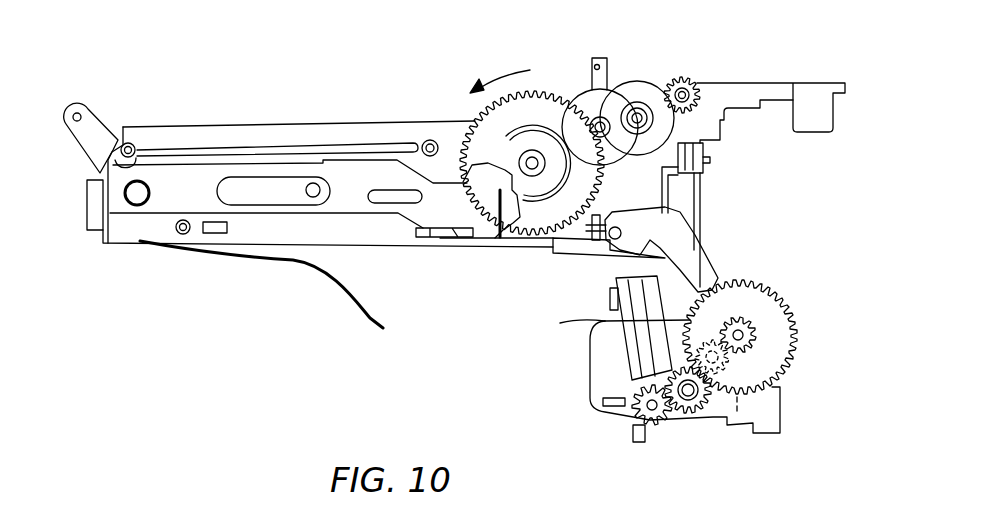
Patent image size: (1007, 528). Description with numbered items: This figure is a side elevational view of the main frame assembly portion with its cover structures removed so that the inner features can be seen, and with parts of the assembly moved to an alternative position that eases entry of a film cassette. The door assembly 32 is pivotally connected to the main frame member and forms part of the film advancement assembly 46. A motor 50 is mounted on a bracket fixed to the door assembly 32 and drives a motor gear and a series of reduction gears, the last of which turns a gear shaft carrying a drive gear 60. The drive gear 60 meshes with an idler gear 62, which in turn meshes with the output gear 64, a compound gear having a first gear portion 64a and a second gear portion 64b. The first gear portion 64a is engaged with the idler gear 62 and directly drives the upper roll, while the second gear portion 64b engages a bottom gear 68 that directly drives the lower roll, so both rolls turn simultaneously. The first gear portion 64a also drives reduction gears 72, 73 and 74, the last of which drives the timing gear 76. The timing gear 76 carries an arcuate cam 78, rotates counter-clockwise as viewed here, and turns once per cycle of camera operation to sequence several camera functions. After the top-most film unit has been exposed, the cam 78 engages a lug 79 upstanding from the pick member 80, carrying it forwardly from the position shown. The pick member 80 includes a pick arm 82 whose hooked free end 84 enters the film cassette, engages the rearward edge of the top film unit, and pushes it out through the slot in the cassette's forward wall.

The door assembly 32 is at (814, 254).
The film advancement assembly 46 is at (508, 369).
The motor 50 is at (595, 322).
The drive gear 60 is at (640, 395).
The idler gear 62 is at (707, 413).
The output gear 64 is at (790, 317).
The first gear portion 64a is at (772, 283).
The second gear portion 64b is at (770, 347).
The bottom gear 68 is at (737, 417).
The reduction gear 72 is at (700, 80).
The reduction gear 73 is at (635, 88).
The reduction gear 74 is at (587, 110).
The timing gear 76 is at (541, 222).
The arcuate cam 78 is at (528, 127).
The lug 79 is at (495, 203).
The pick member 80 is at (302, 157).
The pick arm 82 is at (200, 148).
The hooked free end 84 is at (118, 135).